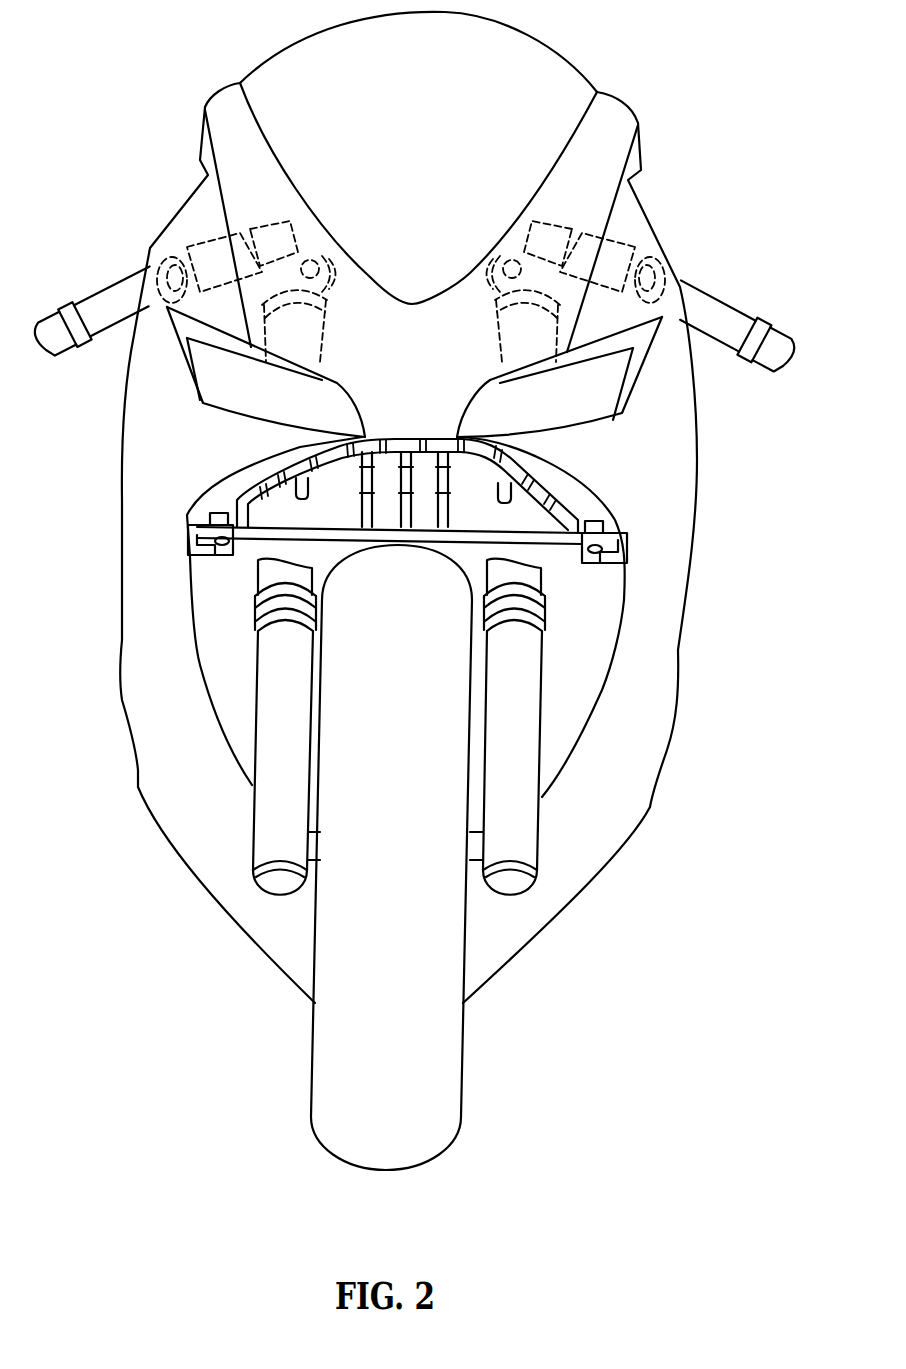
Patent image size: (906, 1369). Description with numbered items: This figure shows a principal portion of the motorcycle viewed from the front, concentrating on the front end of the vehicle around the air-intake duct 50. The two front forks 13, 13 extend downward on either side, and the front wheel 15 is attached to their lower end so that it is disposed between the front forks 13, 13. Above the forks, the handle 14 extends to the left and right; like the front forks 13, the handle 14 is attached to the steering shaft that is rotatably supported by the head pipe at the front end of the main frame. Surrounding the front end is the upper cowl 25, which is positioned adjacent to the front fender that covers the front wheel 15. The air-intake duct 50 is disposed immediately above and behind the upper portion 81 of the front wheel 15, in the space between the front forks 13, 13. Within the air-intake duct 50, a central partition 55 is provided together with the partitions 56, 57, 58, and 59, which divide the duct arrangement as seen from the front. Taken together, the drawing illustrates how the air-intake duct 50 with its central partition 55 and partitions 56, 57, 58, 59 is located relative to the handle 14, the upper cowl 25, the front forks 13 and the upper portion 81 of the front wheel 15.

The front forks 13 is at (273, 808).
The handle 14 is at (100, 307).
The front wheel 15 is at (407, 1052).
The upper cowl 25 is at (152, 350).
The air-intake duct 50 is at (407, 355).
The central partition 55 is at (406, 483).
The partition 56 is at (366, 483).
The partition 57 is at (443, 483).
The partition 58 is at (300, 483).
The partition 59 is at (558, 469).
The upper portion of the front wheel 81 is at (400, 583).